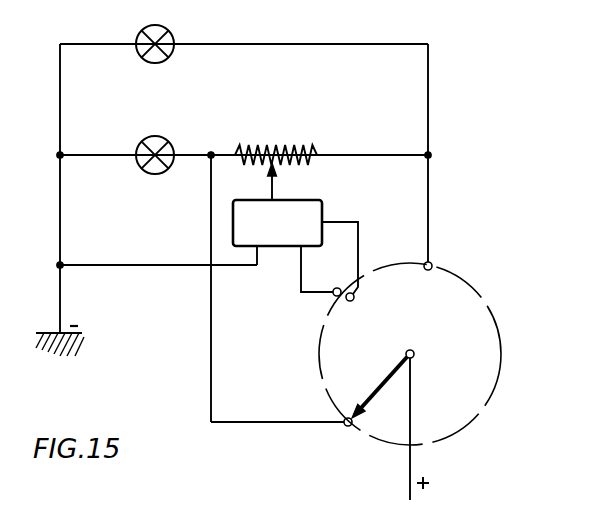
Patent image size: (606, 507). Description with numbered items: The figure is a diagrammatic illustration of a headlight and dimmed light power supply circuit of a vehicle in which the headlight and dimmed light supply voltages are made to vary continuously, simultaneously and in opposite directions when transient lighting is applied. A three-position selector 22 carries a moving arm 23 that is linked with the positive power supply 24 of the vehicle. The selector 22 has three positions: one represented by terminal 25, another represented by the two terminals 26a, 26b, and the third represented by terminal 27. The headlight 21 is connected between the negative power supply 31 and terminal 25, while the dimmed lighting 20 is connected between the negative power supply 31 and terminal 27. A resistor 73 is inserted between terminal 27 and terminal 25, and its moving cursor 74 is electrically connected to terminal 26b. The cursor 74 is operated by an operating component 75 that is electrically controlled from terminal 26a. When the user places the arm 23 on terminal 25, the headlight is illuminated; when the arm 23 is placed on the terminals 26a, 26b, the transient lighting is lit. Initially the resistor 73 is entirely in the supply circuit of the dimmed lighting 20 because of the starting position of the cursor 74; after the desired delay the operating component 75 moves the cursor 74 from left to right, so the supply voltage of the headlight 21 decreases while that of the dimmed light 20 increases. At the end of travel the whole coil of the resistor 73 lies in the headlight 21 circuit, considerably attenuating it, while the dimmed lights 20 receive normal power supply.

The dimmed lighting 20 is at (166, 28).
The headlight 21 is at (166, 138).
The three-position selector 22 is at (499, 337).
The moving arm 23 is at (375, 386).
The positive power supply 24 is at (408, 464).
The terminal 25 is at (348, 428).
The terminal 26a is at (336, 297).
The terminal 26b is at (355, 298).
The terminal 27 is at (432, 263).
The negative power supply 31 is at (60, 301).
The resistor 73 is at (266, 145).
The moving cursor 74 is at (272, 187).
The operating component 75 is at (322, 208).